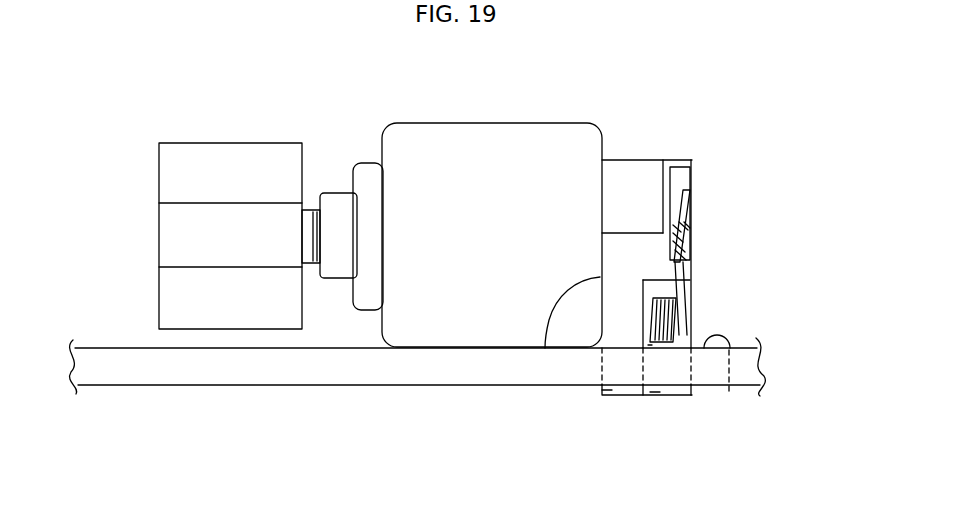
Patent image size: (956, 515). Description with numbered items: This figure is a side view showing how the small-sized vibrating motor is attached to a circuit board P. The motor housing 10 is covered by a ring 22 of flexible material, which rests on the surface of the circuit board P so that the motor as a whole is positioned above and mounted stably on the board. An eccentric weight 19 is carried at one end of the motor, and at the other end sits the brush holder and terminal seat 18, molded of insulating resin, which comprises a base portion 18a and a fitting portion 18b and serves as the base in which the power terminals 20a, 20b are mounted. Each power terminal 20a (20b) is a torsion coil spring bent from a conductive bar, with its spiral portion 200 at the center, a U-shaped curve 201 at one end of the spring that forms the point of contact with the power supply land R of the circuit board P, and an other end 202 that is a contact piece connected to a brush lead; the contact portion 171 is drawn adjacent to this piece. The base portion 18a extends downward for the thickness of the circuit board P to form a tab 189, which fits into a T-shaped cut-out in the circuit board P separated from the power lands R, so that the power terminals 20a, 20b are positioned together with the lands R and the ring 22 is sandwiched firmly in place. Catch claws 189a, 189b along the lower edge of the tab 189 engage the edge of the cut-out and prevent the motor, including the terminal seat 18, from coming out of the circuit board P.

The eccentric weight 19 is at (238, 160).
The motor housing 10 is at (368, 173).
The ring 22 is at (536, 135).
The brush holder and terminal seat 18 is at (700, 163).
The base portion 18a is at (545, 348).
The fitting portion 18b is at (662, 183).
The other end 202 is at (690, 208).
The terminal contact portion 171 is at (688, 218).
The power terminal 20a is at (742, 312).
The power terminal 20b is at (692, 295).
The spiral portion 200 is at (692, 329).
The U-shaped curve at one end of the spring 201 is at (648, 348).
The tab 189 is at (676, 389).
The catch claw 189a is at (600, 390).
The catch claw 189b is at (654, 396).
The power supply land R is at (729, 395).
The circuit board P is at (405, 379).